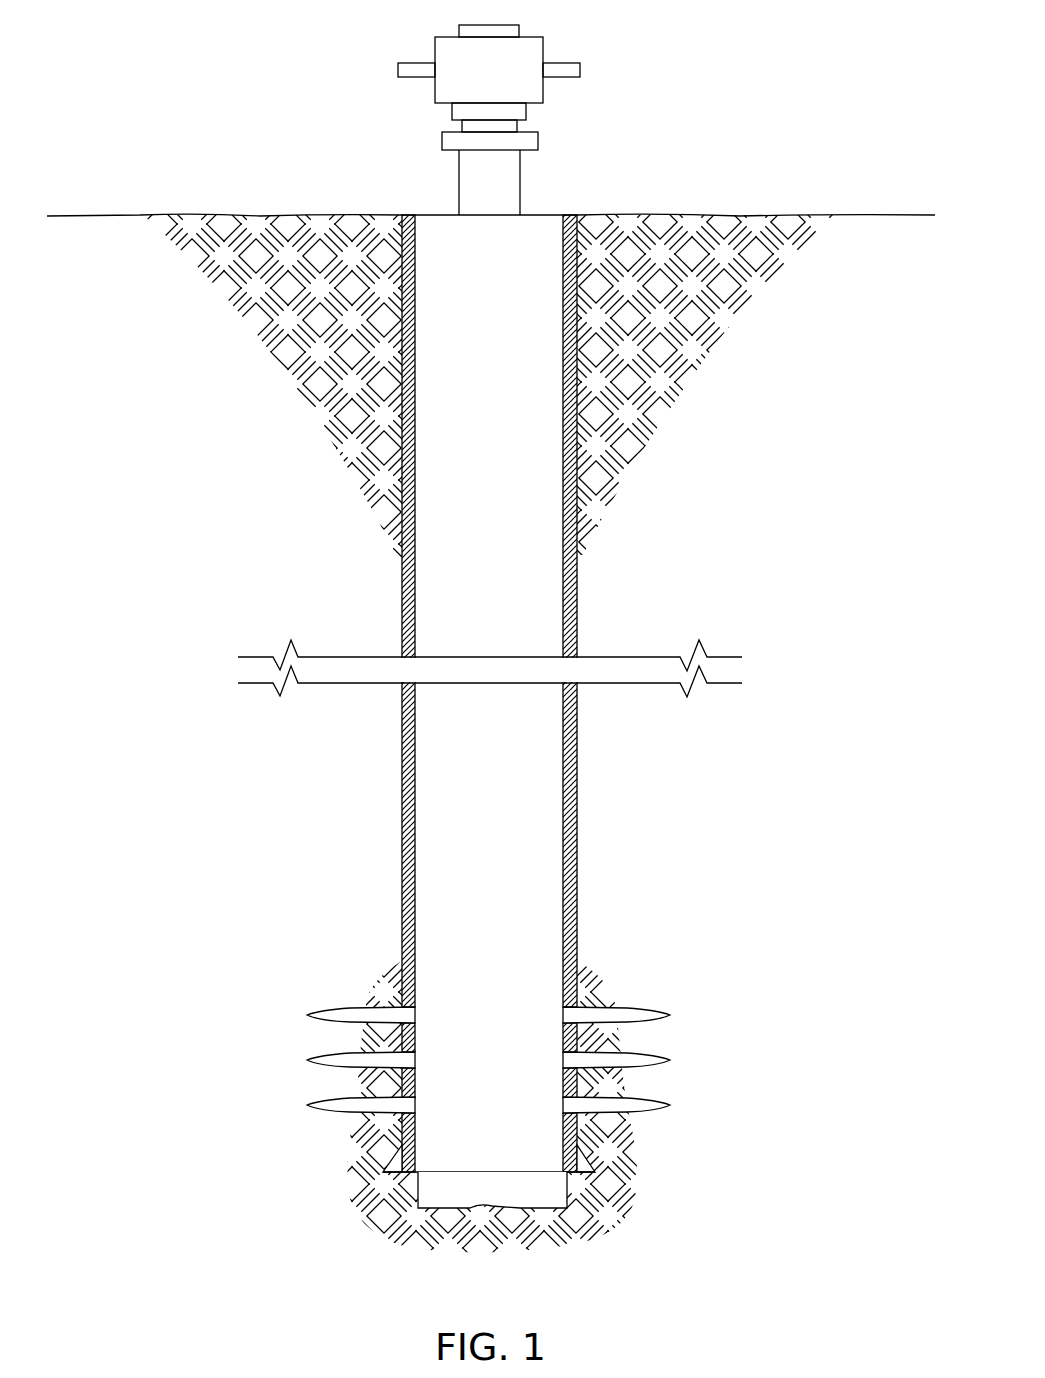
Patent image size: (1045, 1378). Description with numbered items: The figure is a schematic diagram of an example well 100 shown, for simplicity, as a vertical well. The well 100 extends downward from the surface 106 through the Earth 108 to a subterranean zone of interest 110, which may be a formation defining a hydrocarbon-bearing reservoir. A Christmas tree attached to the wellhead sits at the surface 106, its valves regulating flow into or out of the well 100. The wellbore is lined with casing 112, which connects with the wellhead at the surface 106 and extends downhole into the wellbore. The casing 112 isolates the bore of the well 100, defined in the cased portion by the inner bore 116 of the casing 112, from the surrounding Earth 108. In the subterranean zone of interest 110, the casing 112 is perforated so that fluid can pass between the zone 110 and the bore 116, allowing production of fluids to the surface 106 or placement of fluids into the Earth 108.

The well 100 is at (322, 110).
The surface 106 is at (117, 214).
The Earth 108 is at (282, 429).
The subterranean zone of interest 110 is at (703, 1012).
The casing 112 is at (402, 615).
The inner bore 116 is at (536, 610).